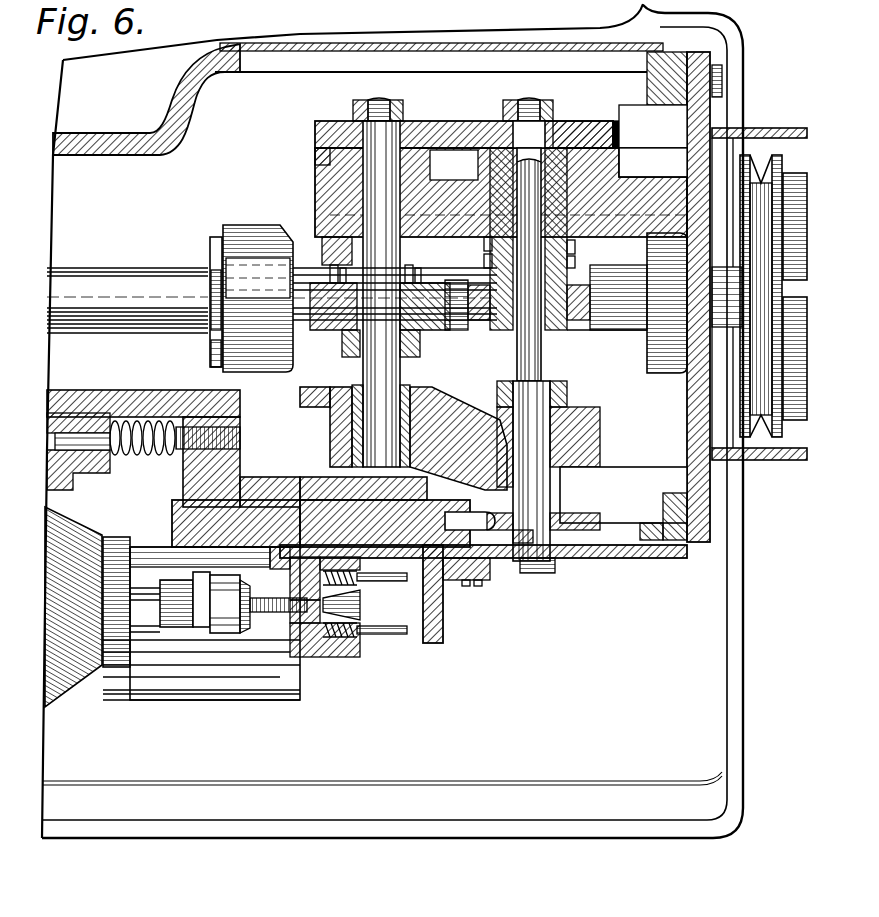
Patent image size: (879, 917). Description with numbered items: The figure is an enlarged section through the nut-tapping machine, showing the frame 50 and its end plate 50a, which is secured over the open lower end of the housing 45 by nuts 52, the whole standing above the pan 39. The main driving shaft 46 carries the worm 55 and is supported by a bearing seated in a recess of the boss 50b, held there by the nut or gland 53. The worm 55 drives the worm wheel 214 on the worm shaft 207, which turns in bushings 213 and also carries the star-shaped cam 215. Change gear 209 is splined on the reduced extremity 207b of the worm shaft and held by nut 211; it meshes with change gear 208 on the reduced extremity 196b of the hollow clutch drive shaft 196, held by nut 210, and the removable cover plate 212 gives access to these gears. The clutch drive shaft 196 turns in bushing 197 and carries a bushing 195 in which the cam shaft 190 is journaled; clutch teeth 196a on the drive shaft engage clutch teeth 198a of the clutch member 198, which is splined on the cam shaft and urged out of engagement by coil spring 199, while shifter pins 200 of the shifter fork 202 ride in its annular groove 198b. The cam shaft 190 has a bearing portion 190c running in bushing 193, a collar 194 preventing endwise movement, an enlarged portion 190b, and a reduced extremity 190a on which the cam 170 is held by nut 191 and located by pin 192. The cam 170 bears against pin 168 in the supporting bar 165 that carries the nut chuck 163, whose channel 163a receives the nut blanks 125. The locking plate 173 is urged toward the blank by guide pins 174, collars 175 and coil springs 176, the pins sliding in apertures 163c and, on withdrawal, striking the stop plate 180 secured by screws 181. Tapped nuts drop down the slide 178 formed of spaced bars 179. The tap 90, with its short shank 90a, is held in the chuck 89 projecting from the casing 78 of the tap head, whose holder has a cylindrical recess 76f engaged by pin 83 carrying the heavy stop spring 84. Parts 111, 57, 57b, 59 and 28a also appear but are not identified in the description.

The housing 45 is at (105, 131).
The removable cover plate 212 is at (418, 44).
The pan 39 is at (334, 830).
The main driving shaft 46 is at (84, 272).
The nut or gland 53 is at (208, 249).
The boss 50b is at (241, 227).
The worm 55 is at (316, 283).
The change gear 209 is at (355, 120).
The bushings 213 is at (350, 165).
The worm shaft 207 is at (372, 192).
The star-shaped cam 215 is at (330, 238).
The nut 211 is at (362, 100).
The nut 210 is at (509, 100).
The reduced extremity 207b is at (401, 119).
The reduced extremity 196b is at (566, 140).
The clutch drive shaft 196 is at (660, 80).
The change gear 208 is at (621, 131).
The bushing 197 is at (492, 165).
The bushing 195 is at (594, 152).
The coil spring 199 is at (490, 244).
The clutch teeth 198a is at (490, 263).
The clutch teeth 196a is at (576, 254).
The shifter fork 202 is at (590, 290).
The clutch member 198 is at (567, 322).
The annular groove 198b is at (640, 335).
The cam shaft 190 is at (550, 358).
The bearing portion 190c is at (568, 394).
The shifter pins 200 is at (488, 320).
The collar 194 is at (512, 381).
The bushing 193 is at (506, 412).
The worm wheel 214 is at (338, 320).
The frame 50 is at (330, 421).
The cylindrical recess 76f is at (58, 418).
The heavy coil spring 84 is at (130, 422).
The pin 83 is at (107, 456).
The supporting bar 165 is at (176, 506).
The spaced bars 179 is at (156, 565).
The plate 111 is at (104, 571).
The casing 78 is at (73, 607).
The pin 168 is at (455, 516).
The nut blanks 125 is at (385, 523).
The coil spring 176 is at (356, 672).
The guide pins 174 is at (430, 660).
The collar 175 is at (406, 674).
The channel 163a is at (370, 605).
The cam 170 is at (608, 522).
The enlarged portion 190b is at (590, 502).
The reduced extremity 190a is at (533, 560).
The nut 191 is at (578, 556).
The pin 192 is at (607, 566).
The screws 181 is at (482, 586).
The stop plate 180 is at (445, 641).
The apertures 163c is at (318, 650).
The nut chuck 163 is at (368, 658).
The locking plate 173 is at (280, 620).
The chuck 89 is at (200, 602).
The shank 90a is at (228, 608).
The tap 90 is at (262, 608).
The slide 178 is at (110, 697).
The plate 57b is at (758, 160).
The pulley 57 is at (780, 443).
The pulley portion 59 is at (810, 427).
The nuts 52 is at (722, 70).
The end plate 50a is at (712, 112).
The axle 28a is at (806, 128).